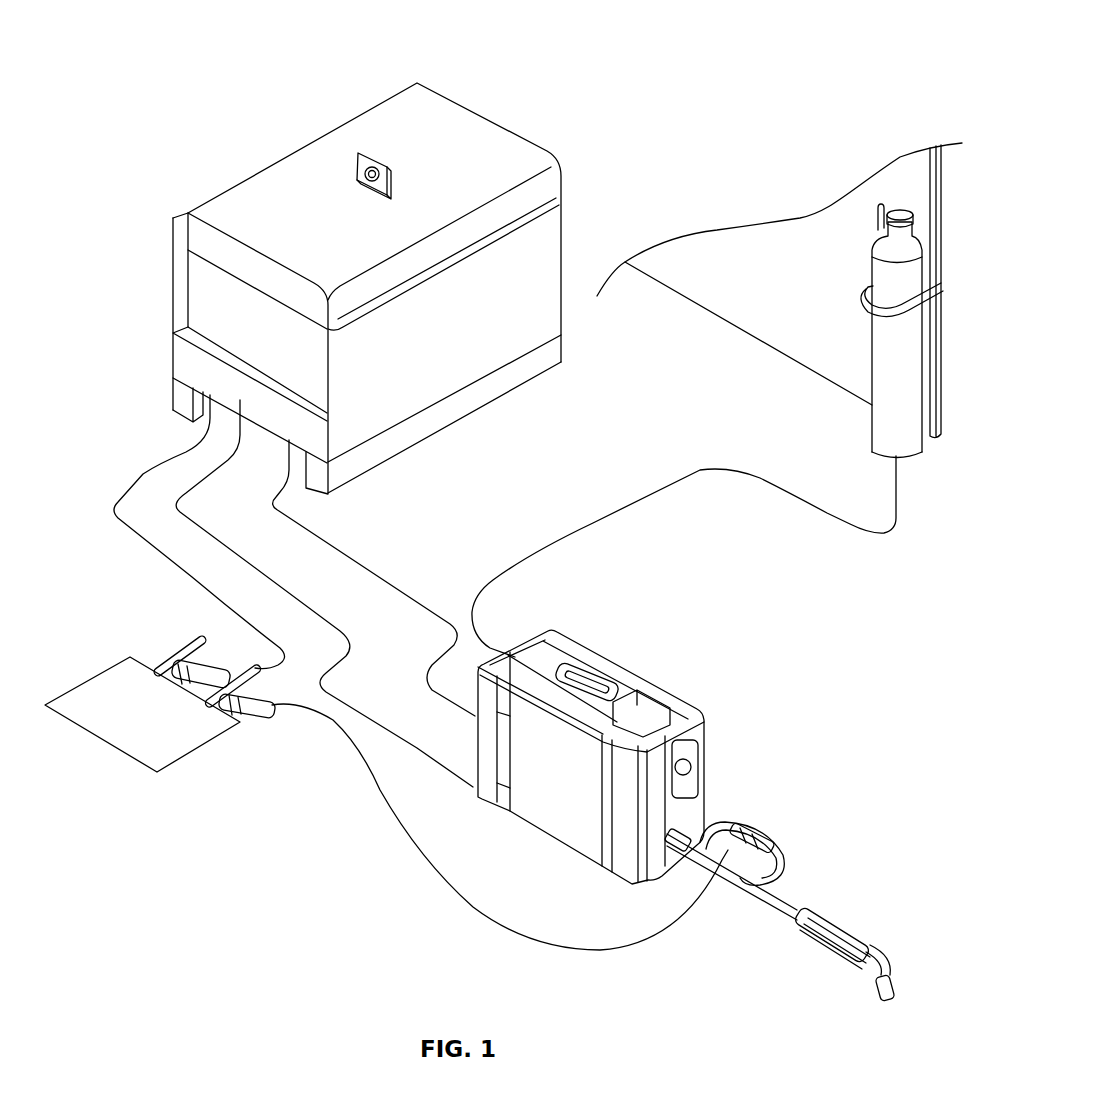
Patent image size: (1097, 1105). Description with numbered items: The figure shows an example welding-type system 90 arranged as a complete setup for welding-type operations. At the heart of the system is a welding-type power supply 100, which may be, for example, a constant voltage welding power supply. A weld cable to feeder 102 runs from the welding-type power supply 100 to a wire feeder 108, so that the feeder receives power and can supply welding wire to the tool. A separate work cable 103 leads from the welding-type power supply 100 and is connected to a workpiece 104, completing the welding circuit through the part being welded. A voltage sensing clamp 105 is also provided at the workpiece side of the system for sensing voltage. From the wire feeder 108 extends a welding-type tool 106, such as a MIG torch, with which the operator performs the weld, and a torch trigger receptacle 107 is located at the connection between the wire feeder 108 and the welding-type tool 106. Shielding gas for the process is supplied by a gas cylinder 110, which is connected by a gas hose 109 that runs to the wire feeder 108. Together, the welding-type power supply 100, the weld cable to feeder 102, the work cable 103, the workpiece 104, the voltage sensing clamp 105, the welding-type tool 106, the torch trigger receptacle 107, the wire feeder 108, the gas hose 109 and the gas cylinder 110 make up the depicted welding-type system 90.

The welding-type system 90 is at (626, 61).
The welding-type power supply 100 is at (295, 153).
The weld cable to feeder 102 is at (175, 510).
The work cable 103 is at (147, 477).
The workpiece 104 is at (75, 725).
The voltage sensing clamp 105 is at (253, 713).
The welding-type tool 106 is at (845, 923).
The torch trigger receptacle 107 is at (767, 830).
The wire feeder 108 is at (613, 647).
The gas hose 109 is at (877, 534).
The gas cylinder 110 is at (881, 287).